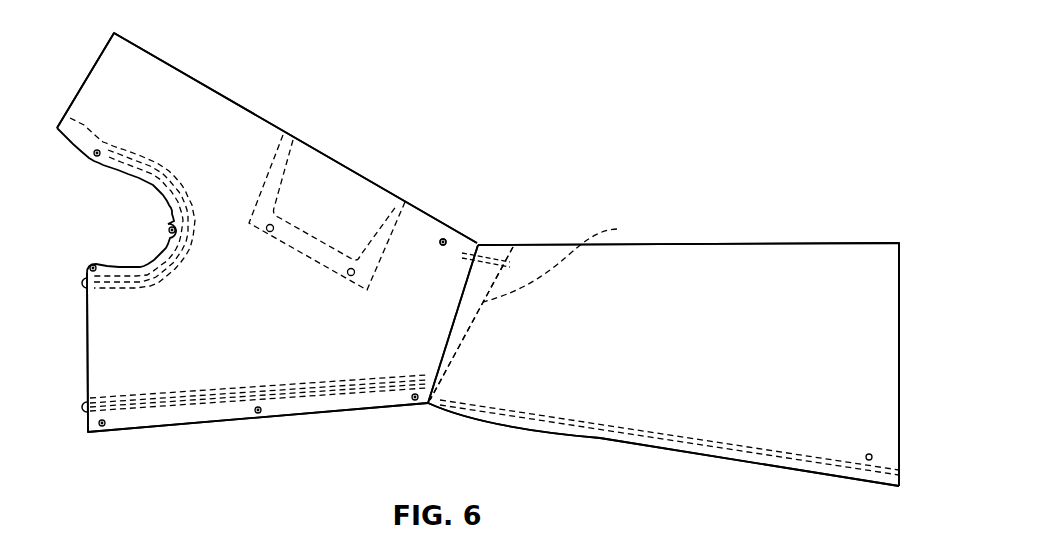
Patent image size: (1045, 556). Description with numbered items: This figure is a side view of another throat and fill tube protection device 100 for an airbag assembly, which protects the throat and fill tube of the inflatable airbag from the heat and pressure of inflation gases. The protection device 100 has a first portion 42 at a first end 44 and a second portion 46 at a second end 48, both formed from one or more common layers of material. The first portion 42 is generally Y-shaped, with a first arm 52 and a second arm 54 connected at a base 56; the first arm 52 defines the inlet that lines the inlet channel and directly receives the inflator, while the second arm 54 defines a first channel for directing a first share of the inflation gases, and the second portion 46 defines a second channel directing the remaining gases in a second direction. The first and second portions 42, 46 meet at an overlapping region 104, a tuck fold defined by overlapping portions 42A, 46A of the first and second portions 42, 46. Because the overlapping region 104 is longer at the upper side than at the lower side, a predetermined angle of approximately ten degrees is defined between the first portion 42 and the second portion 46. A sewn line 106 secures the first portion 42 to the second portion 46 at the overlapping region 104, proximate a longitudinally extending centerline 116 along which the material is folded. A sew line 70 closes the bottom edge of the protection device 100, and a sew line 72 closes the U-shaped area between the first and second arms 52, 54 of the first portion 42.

The throat and fill tube protection device 100 is at (812, 108).
The first arm 52 is at (153, 70).
The sew line 72 is at (168, 178).
The base 56 is at (434, 230).
The sewn line 106 is at (492, 258).
The overlapping region 104 is at (485, 288).
The overlapping portion of the first portion 42A is at (617, 229).
The longitudinally extending centerline 116 is at (812, 242).
The second end 48 is at (900, 345).
The first end 44 is at (86, 355).
The first portion 42 is at (155, 440).
The second arm 54 is at (245, 368).
The overlapping portion of the second portion 46A is at (468, 312).
The second portion 46 is at (682, 455).
The sew line 70 is at (772, 457).